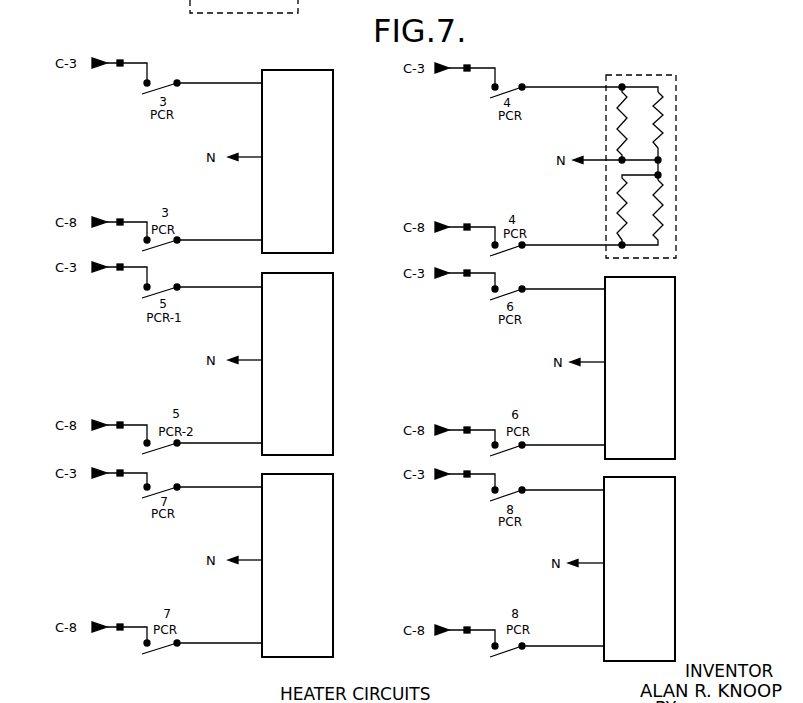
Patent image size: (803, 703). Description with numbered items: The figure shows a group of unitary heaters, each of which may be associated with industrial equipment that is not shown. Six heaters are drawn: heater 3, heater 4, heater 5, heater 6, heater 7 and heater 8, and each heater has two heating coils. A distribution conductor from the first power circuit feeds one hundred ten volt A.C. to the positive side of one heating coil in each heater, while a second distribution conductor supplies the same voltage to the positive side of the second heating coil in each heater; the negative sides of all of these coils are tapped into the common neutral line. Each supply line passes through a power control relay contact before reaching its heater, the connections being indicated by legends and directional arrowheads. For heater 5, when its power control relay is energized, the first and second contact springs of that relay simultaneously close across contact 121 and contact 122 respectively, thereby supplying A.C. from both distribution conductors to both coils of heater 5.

The heater 3 is at (337, 161).
The heater 4 is at (681, 166).
The heater 5 is at (337, 364).
The heater 6 is at (679, 368).
The heater 7 is at (336, 565).
The heater 8 is at (678, 569).
The contact 121 is at (143, 287).
The contact 122 is at (143, 441).